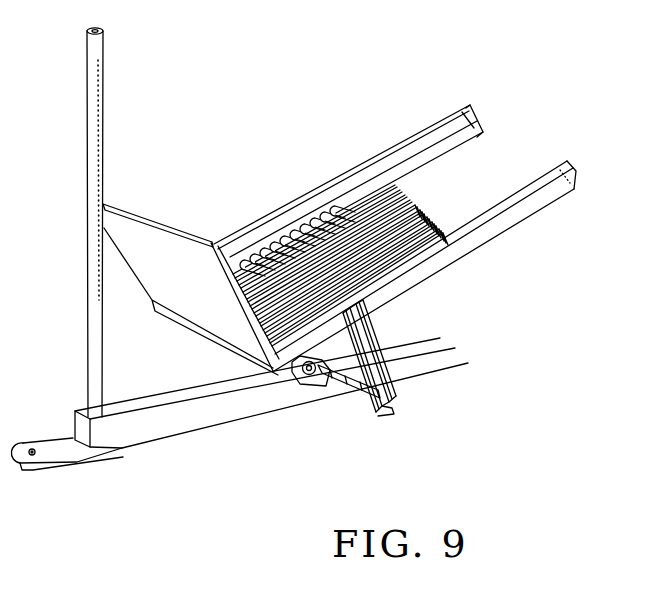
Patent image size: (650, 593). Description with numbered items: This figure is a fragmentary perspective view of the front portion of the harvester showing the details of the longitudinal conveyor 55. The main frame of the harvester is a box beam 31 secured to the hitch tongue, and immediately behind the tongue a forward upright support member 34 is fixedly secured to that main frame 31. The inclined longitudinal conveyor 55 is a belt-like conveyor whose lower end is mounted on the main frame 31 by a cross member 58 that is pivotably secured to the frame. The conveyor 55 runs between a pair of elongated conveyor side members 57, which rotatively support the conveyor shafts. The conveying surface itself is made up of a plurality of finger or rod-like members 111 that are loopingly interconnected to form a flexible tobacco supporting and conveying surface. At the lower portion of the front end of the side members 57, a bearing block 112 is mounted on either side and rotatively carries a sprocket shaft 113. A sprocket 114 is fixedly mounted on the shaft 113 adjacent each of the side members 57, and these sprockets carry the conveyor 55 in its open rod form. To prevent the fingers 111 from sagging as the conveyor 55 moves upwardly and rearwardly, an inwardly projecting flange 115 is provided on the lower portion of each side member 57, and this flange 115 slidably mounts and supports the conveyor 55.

The box beam 31 is at (165, 422).
The forward upright support member 34 is at (89, 305).
The longitudinal conveyor 55 is at (320, 240).
The conveyor side members 57 is at (373, 158).
The cross member 58 is at (180, 257).
The finger or rod-like members 111 is at (363, 257).
The bearing block 112 is at (300, 373).
The sprocket shaft 113 is at (317, 378).
The sprocket 114 is at (328, 377).
The rail lip 115 is at (450, 147).